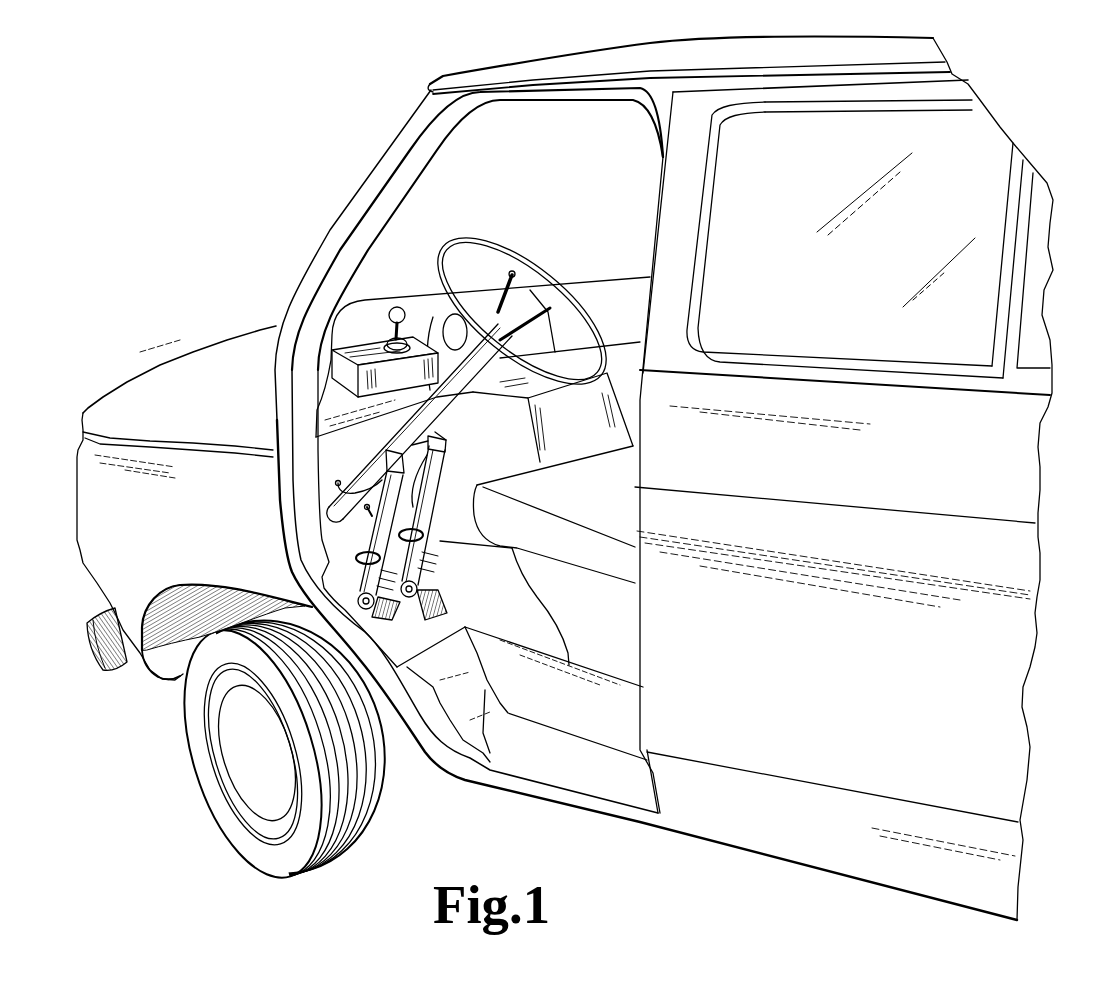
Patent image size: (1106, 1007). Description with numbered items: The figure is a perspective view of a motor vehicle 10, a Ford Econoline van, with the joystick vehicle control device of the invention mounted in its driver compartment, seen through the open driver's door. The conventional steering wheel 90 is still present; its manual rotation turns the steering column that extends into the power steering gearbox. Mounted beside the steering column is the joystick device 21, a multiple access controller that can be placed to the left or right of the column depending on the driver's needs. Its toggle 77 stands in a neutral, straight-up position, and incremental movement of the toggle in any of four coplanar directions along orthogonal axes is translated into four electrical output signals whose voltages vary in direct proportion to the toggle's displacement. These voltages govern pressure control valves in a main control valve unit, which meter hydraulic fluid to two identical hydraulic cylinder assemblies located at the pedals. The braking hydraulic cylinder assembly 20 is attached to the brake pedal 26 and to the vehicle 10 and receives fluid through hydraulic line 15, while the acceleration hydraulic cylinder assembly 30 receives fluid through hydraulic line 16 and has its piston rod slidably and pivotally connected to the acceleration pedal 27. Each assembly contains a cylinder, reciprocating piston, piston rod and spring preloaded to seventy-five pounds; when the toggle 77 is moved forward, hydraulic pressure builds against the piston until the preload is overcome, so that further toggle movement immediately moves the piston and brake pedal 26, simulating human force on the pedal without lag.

The vehicle 10 is at (358, 203).
The hydraulic line 15 is at (327, 510).
The hydraulic line 16 is at (447, 453).
The braking hydraulic cylinder assembly 20 is at (370, 536).
The joystick device 21 is at (422, 336).
The brake pedal 26 is at (383, 613).
The acceleration pedal 27 is at (445, 600).
The acceleration hydraulic cylinder assembly 30 is at (440, 483).
The toggle 77 is at (398, 306).
The steering wheel 90 is at (537, 273).